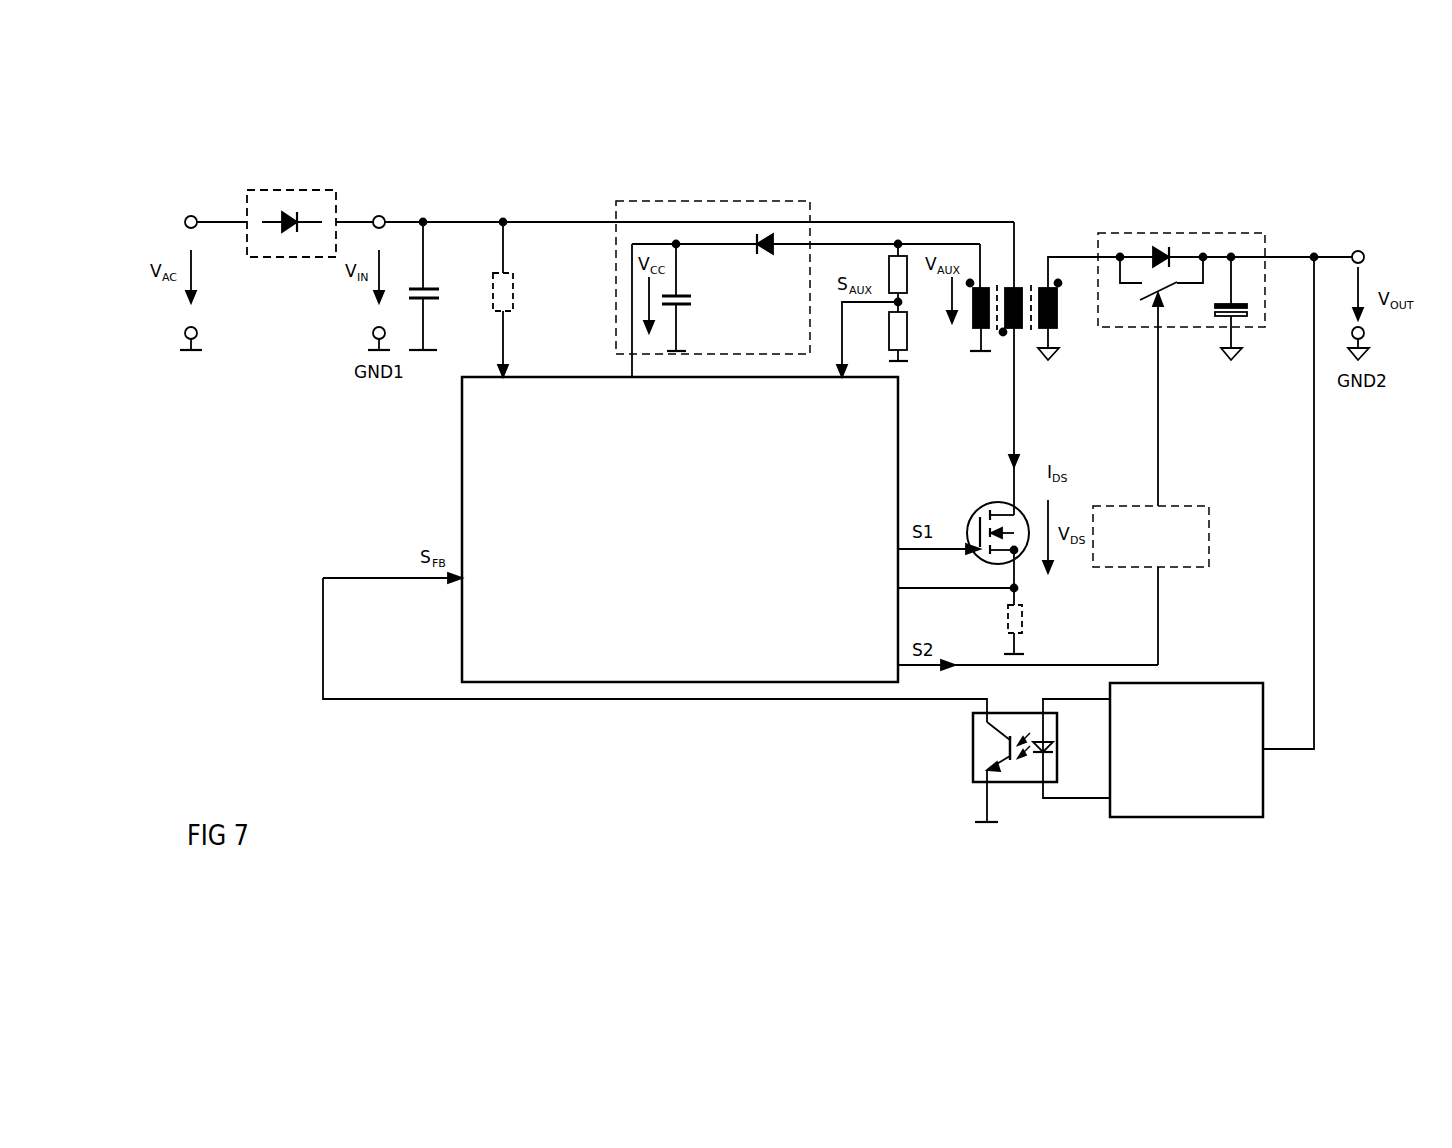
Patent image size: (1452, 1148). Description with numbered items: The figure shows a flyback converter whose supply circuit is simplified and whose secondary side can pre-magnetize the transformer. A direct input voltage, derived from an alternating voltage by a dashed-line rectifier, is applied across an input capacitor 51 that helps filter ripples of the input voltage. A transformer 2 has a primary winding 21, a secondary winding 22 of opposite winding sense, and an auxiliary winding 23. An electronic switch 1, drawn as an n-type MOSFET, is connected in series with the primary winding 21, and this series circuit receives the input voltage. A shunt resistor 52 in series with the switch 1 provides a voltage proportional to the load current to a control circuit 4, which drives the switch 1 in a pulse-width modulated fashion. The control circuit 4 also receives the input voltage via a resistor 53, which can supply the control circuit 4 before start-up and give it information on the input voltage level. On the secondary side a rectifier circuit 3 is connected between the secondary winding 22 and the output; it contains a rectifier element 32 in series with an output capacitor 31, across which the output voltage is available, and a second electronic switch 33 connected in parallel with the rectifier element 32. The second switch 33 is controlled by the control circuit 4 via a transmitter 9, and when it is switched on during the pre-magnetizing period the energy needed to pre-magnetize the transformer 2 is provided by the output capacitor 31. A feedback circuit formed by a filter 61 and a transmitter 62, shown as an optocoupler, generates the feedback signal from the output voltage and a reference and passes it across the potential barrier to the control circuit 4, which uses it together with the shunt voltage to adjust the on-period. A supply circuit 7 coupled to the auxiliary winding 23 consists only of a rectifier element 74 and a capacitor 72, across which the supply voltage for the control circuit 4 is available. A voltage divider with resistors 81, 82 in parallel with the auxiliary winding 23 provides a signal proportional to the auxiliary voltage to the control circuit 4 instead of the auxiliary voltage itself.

The electronic switch 1 is at (968, 508).
The transformer 2 is at (1147, 284).
The primary winding 21 is at (1010, 288).
The secondary winding 22 is at (1058, 322).
The auxiliary winding 23 is at (972, 323).
The rectifier circuit 3 is at (1181, 269).
The output capacitor 31 is at (1236, 307).
The rectifier element 32 is at (1145, 243).
The second electronic switch 33 is at (1160, 285).
The control circuit 4 is at (460, 482).
The input capacitor 51 is at (440, 296).
The shunt resistor 52 is at (1025, 630).
The resistor 53 is at (514, 296).
The filter 61 is at (1195, 683).
The transmitter 62 is at (970, 752).
The supply circuit 7 is at (798, 267).
The capacitor 72 is at (683, 296).
The rectifier element 74 is at (765, 260).
The voltage divider resistor 81 is at (879, 272).
The voltage divider resistor 82 is at (880, 330).
The transmitter 9 is at (1212, 540).